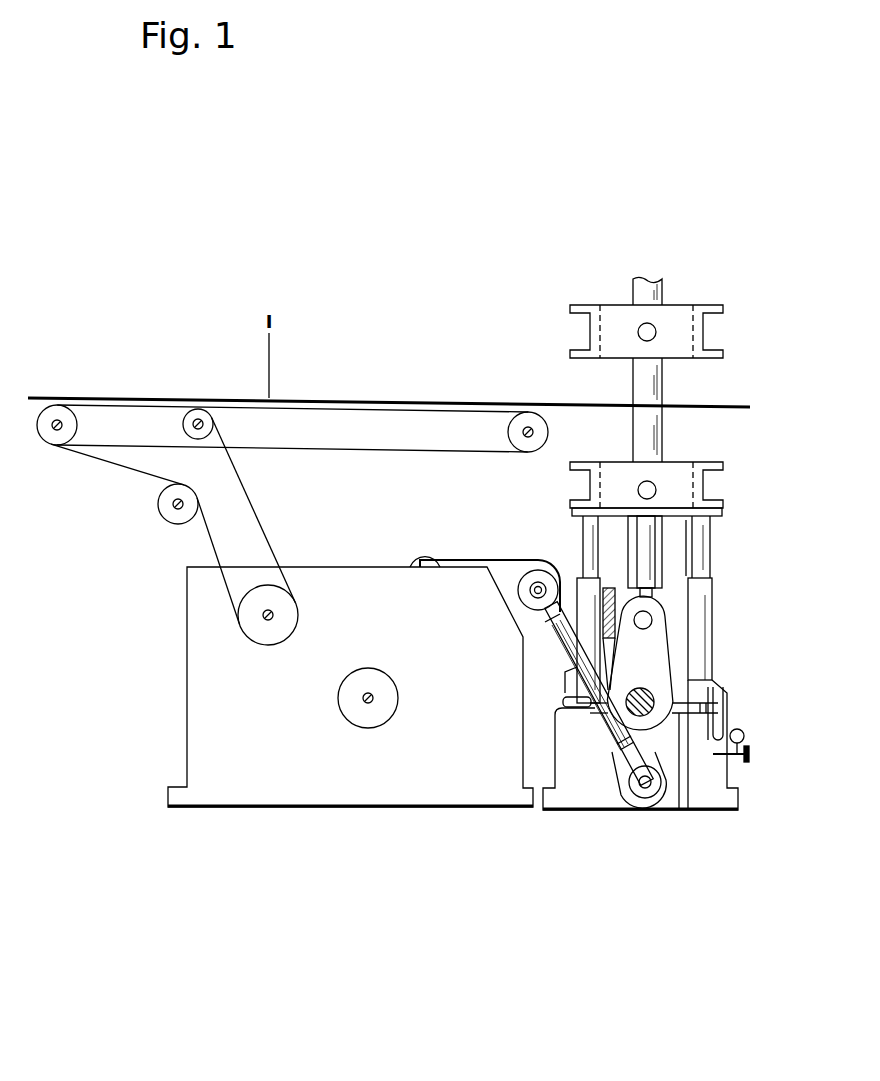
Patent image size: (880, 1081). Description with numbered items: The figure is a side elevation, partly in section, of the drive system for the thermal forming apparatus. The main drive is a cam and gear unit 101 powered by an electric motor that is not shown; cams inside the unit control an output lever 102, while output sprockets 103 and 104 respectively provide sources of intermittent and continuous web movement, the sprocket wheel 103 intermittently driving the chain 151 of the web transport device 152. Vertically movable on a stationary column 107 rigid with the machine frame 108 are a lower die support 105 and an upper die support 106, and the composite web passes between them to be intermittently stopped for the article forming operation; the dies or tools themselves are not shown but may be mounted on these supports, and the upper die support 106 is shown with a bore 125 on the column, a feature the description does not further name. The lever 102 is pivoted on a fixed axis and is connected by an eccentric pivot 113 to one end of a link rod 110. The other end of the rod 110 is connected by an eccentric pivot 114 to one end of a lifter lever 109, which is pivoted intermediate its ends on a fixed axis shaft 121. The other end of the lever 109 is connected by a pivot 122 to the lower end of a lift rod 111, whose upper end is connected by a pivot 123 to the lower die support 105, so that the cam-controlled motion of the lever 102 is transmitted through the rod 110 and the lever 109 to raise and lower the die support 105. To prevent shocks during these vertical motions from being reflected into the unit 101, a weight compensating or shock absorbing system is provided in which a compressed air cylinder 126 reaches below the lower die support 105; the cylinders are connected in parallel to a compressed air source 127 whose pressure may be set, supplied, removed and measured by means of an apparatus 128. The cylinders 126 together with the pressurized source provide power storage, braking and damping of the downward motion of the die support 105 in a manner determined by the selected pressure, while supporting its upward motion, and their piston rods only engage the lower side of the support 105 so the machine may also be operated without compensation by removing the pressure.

The cam and gear unit 101 is at (361, 583).
The output lever 102 is at (452, 567).
The output sprocket 103 is at (257, 634).
The output sprocket 104 is at (360, 716).
The lower die support 105 is at (675, 475).
The upper die support 106 is at (613, 335).
The stationary column 107 is at (651, 432).
The machine frame 108 is at (703, 568).
The lifter lever 109 is at (678, 644).
The link rod 110 is at (522, 655).
The lift rod 111 is at (645, 533).
The eccentric pivot 113 is at (518, 582).
The eccentric pivot 114 is at (645, 783).
The fixed axis shaft 121 is at (632, 712).
The pivot 122 is at (668, 690).
The pivot 123 is at (656, 490).
The bore 125 is at (640, 326).
The compressed air cylinder 126 is at (583, 582).
The compressed air source 127 is at (665, 804).
The pressure setting apparatus 128 is at (750, 755).
The chain 151 is at (242, 477).
The web transport device 152 is at (352, 452).